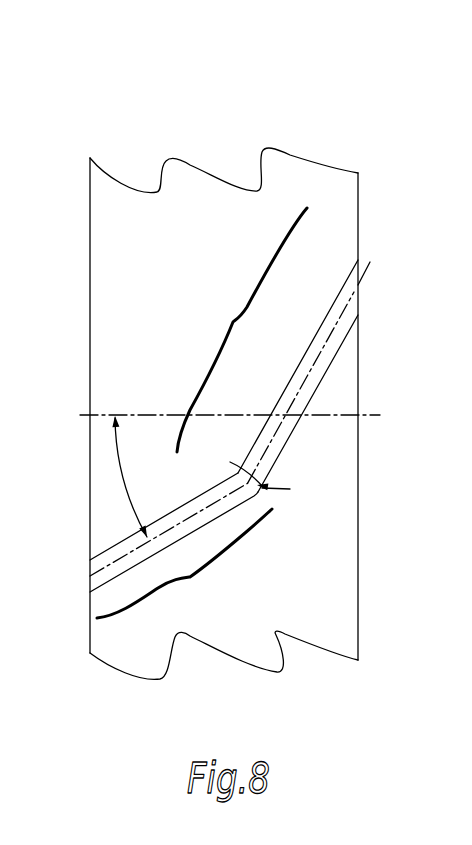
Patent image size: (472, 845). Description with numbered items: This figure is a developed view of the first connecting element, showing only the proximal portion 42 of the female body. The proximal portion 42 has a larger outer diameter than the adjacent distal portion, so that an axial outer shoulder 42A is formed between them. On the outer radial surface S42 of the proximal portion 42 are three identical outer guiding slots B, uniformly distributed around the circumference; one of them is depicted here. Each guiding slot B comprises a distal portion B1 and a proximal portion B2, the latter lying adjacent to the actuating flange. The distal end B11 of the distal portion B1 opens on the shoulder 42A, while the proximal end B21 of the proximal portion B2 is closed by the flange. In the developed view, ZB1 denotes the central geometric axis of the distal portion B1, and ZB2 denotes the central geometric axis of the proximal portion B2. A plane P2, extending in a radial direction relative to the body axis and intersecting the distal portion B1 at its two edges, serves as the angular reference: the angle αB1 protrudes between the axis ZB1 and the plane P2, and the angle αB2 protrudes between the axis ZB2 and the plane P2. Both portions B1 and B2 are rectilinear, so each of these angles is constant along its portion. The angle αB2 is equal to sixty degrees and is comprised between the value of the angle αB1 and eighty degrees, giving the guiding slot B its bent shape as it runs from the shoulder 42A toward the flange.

The proximal portion 42 is at (368, 67).
The outer radial surface S42 is at (197, 212).
The axial outer shoulder 42A is at (90, 287).
The plane P2 is at (217, 399).
The outer guiding slot B is at (180, 515).
The distal end of the distal portion B11 is at (88, 570).
The proximal end of the proximal portion B21 is at (358, 297).
The central geometric axis of the distal portion ZB1 is at (107, 569).
The central geometric axis of the proximal portion ZB2 is at (335, 328).
The distal portion of the guiding slot B1 is at (184, 563).
The proximal portion of the guiding slot B2 is at (213, 407).